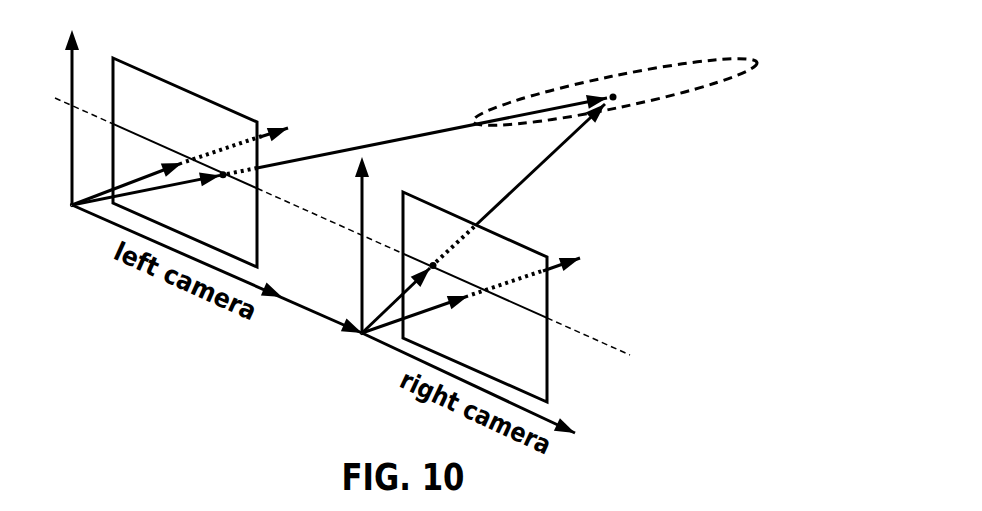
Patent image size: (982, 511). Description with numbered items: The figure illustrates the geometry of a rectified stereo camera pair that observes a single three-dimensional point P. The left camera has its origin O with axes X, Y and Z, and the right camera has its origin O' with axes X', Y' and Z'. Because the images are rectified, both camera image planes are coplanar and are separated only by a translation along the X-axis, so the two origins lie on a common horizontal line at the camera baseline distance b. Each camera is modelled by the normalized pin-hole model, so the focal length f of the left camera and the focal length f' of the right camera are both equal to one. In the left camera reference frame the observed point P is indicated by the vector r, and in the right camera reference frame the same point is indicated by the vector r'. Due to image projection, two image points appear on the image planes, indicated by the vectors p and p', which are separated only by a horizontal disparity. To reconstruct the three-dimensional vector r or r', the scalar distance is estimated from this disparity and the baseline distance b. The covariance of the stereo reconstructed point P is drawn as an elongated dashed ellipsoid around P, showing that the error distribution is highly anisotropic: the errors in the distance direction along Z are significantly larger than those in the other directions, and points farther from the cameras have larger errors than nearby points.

The left camera origin O is at (59, 227).
The X-axis X is at (293, 277).
The Y-axis Y is at (95, 53).
The Z-axis Z is at (312, 132).
The focal length f is at (150, 169).
The image point vector p is at (164, 187).
The vector to the point in left camera frame r is at (432, 131).
The camera baseline distance b is at (302, 340).
The right camera origin O' is at (362, 358).
The X'-axis X' is at (590, 405).
The Y'-axis Y' is at (388, 171).
The Z'-axis Z' is at (611, 260).
The focal length of right camera f' is at (453, 317).
The image point vector in right camera p' is at (419, 279).
The vector to the point in right camera frame r' is at (540, 164).
The 3-D point P is at (612, 72).